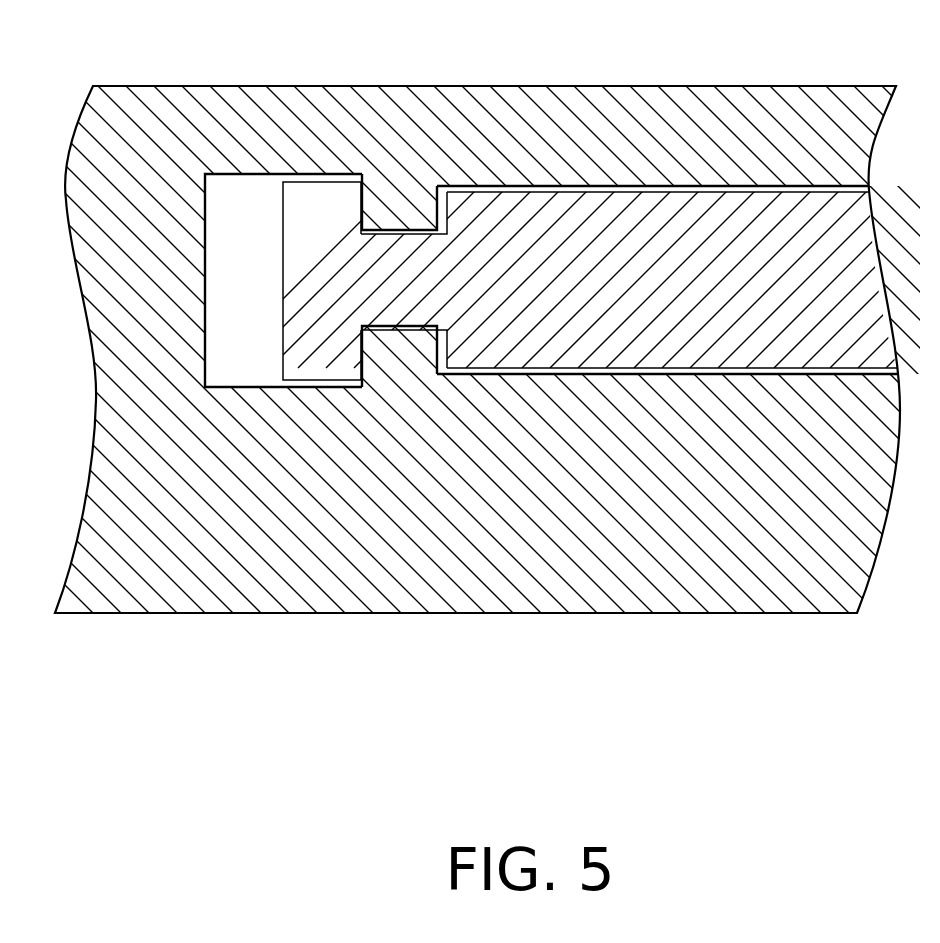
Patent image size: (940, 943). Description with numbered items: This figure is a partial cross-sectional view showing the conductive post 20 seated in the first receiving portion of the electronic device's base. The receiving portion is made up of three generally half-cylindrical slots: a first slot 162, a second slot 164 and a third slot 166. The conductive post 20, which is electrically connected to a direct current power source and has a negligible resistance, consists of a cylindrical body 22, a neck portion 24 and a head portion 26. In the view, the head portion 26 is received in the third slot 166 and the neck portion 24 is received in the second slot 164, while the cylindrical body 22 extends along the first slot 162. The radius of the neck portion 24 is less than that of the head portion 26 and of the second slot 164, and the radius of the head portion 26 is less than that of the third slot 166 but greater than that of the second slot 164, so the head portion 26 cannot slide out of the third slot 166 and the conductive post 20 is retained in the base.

The conductive post 20 is at (577, 484).
The cylindrical body 22 is at (622, 298).
The neck portion 24 is at (408, 283).
The head portion 26 is at (323, 330).
The first slot 162 is at (567, 190).
The second slot 164 is at (410, 233).
The third slot 166 is at (248, 213).